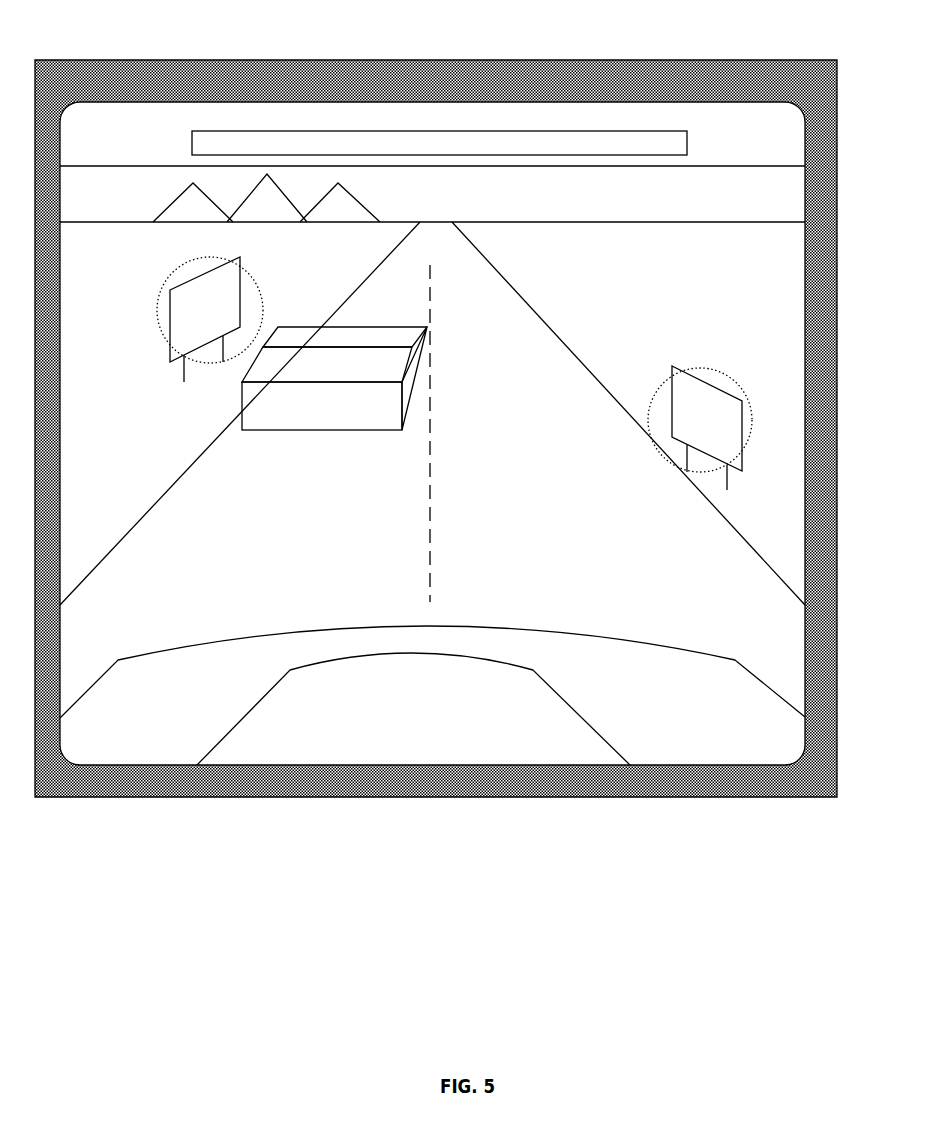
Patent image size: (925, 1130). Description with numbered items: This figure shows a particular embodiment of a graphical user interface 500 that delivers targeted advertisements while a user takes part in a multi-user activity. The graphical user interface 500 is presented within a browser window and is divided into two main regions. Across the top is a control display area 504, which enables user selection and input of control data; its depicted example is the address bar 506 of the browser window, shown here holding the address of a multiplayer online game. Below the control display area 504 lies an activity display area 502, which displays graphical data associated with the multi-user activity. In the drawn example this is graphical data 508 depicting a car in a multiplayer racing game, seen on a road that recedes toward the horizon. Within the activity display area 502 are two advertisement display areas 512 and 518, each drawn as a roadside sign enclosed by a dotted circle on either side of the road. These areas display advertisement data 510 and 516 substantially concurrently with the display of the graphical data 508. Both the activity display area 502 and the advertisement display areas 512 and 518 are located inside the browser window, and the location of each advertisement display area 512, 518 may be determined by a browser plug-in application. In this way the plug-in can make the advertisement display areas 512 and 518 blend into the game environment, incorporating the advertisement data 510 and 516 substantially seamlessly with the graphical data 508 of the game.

The graphical user interface 500 is at (785, 55).
The activity display area 502 is at (770, 200).
The control display area 504 is at (770, 162).
The address bar 506 is at (659, 131).
The graphical data 508 is at (370, 325).
The advertisement data 510 is at (240, 293).
The advertisement display area 512 is at (263, 307).
The advertisement data 516 is at (707, 383).
The advertisement display area 518 is at (752, 433).